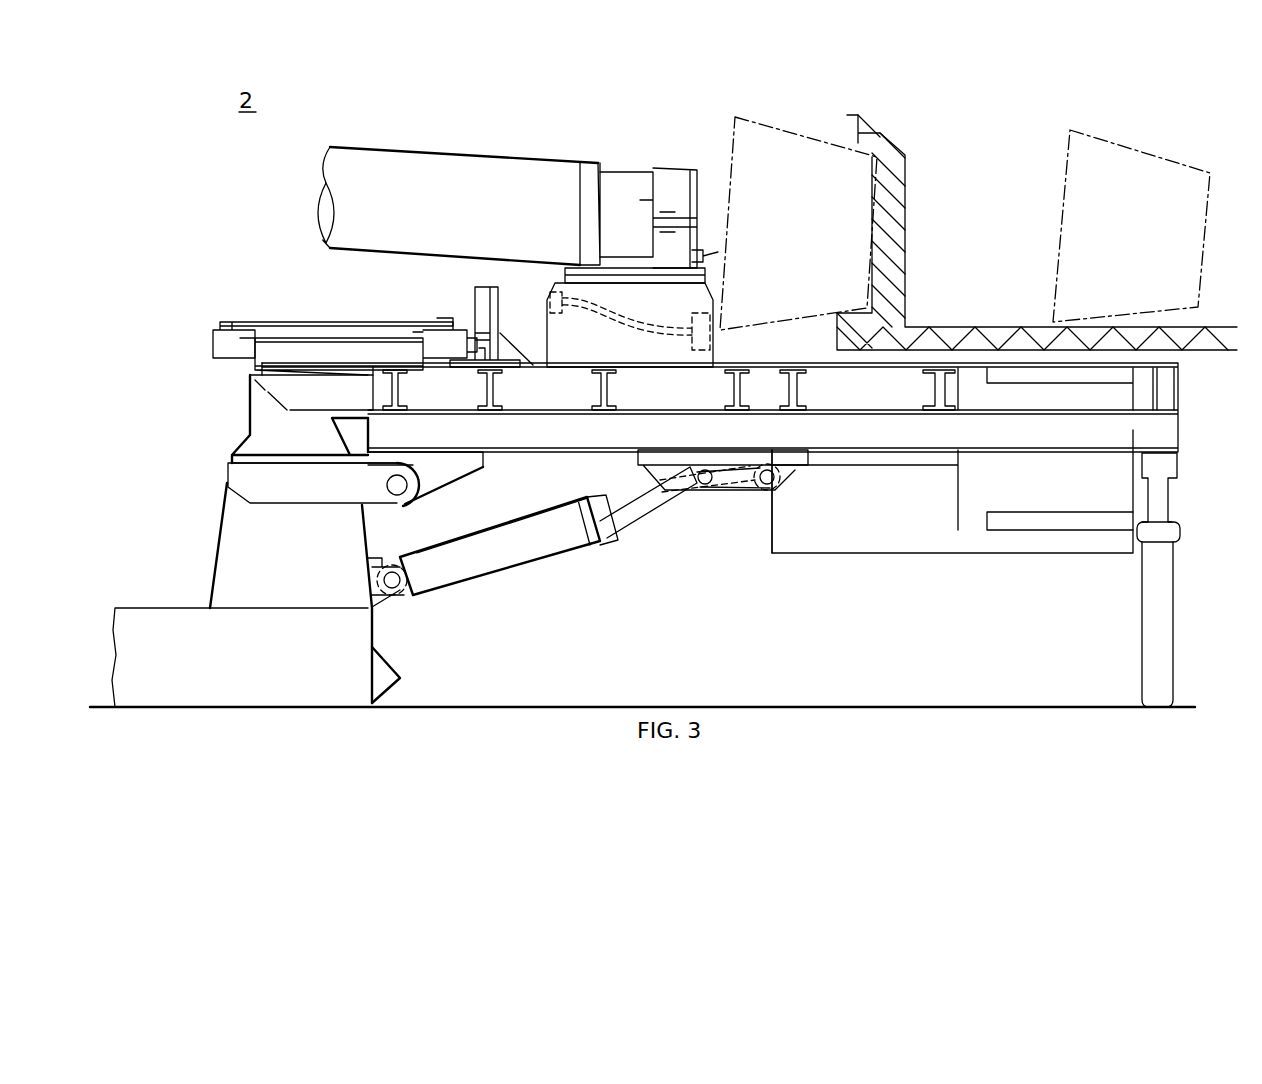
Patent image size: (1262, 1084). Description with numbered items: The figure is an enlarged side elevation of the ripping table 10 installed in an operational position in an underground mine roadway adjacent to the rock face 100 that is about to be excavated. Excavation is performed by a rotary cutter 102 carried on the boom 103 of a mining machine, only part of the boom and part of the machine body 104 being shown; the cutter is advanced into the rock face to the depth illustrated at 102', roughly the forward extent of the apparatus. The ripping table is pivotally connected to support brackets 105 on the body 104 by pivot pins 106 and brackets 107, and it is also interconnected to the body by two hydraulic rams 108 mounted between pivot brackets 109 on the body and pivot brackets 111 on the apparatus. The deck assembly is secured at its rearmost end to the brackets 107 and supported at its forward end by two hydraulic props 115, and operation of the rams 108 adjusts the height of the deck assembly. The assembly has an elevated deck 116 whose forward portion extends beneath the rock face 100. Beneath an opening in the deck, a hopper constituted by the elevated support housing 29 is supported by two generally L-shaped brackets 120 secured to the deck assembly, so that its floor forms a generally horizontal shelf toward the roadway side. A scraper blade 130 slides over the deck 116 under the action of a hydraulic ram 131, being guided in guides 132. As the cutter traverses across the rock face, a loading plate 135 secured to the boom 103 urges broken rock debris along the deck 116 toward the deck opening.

The ripping table 10 is at (1182, 396).
The elevated support housing 29 is at (1040, 498).
The rock face 100 is at (1002, 251).
The rotary cutter 102 is at (798, 223).
The rotary cutter advanced position 102' is at (1131, 226).
The boom 103 is at (446, 165).
The body 104 is at (240, 522).
The support brackets 105 is at (352, 493).
The pivot pins 106 is at (398, 490).
The brackets 107 is at (455, 475).
The hydraulic rams 108 is at (530, 527).
The pivot brackets 109 is at (380, 597).
The pivot brackets 111 is at (735, 478).
The hydraulic props 115 is at (1163, 603).
The elevated deck 116 is at (752, 363).
The L-shaped brackets 120 is at (851, 540).
The scraper blade 130 is at (492, 310).
The hydraulic ram 131 is at (288, 333).
The guides 132 is at (370, 350).
The loading plate 135 is at (565, 326).